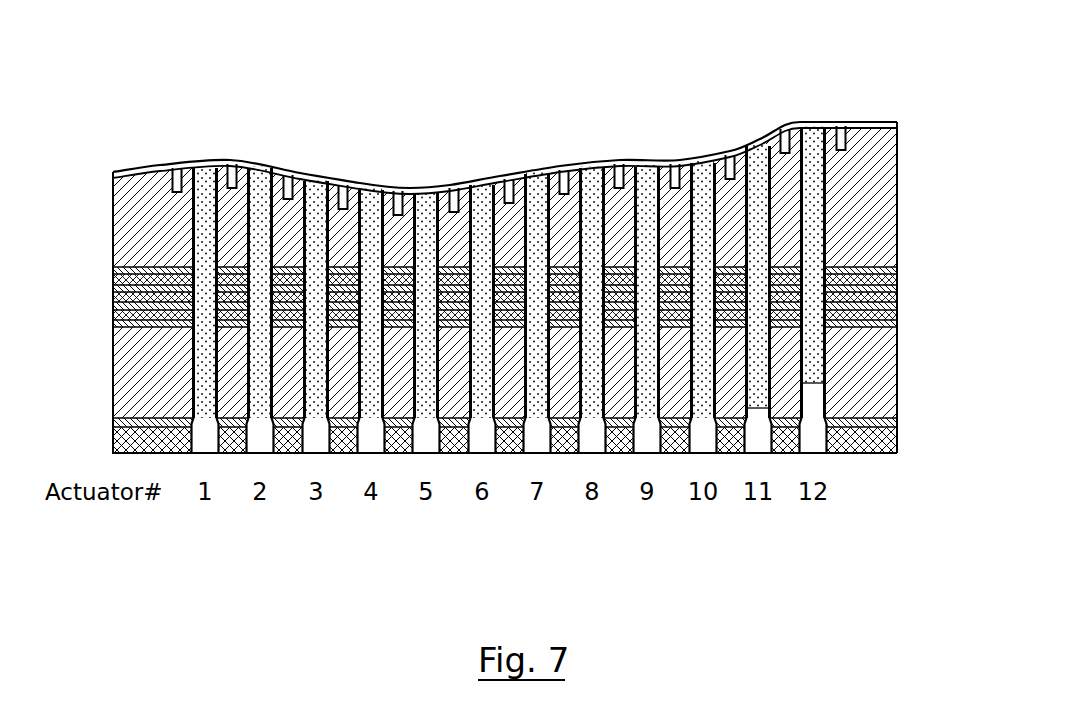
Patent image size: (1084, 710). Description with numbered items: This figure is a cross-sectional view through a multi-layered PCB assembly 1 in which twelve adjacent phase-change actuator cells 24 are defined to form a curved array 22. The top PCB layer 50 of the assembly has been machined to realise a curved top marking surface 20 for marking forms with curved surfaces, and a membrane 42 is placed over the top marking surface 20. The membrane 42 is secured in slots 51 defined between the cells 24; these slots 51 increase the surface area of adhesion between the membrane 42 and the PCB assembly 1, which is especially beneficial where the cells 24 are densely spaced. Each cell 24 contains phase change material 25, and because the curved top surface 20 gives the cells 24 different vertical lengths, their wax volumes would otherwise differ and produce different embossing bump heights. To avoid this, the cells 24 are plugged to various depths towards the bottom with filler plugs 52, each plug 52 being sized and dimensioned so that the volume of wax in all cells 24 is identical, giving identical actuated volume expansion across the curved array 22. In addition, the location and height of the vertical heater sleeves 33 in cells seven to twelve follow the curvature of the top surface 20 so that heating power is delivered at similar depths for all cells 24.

The multi-layered PCB assembly 1 is at (140, 358).
The top marking surface 20 is at (682, 168).
The array 22 is at (406, 166).
The phase-change actuator cell 24 is at (818, 235).
The phase change material 25 is at (810, 357).
The vertical heater sleeve 33 is at (826, 403).
The membrane 42 is at (262, 168).
The top PCB layer 50 is at (873, 150).
The slot 51 is at (452, 197).
The filler plug 52 is at (812, 447).